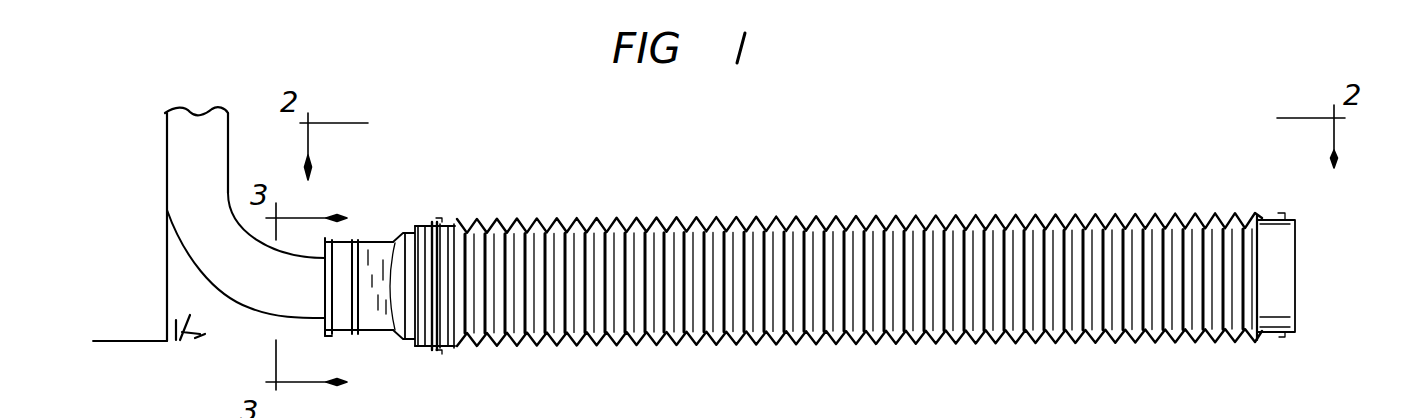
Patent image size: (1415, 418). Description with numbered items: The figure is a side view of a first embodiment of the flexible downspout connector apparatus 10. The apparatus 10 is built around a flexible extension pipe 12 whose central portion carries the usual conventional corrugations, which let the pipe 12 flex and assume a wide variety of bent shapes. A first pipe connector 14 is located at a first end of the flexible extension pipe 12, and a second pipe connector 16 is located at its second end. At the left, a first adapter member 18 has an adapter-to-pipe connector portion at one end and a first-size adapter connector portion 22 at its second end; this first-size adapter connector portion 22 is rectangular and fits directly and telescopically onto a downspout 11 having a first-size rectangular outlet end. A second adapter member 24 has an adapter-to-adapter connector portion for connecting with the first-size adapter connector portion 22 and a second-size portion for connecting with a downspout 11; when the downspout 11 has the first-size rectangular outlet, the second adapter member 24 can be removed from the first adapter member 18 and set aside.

The flexible downspout connector apparatus 10 is at (800, 198).
The downspout 11 is at (257, 287).
The flexible extension pipe 12 is at (838, 335).
The first pipe connector 14 is at (441, 252).
The second pipe connector 16 is at (1278, 280).
The first adapter member 18 is at (378, 232).
The first-size adapter connector portion 22 is at (480, 322).
The second adapter member 24 is at (347, 338).